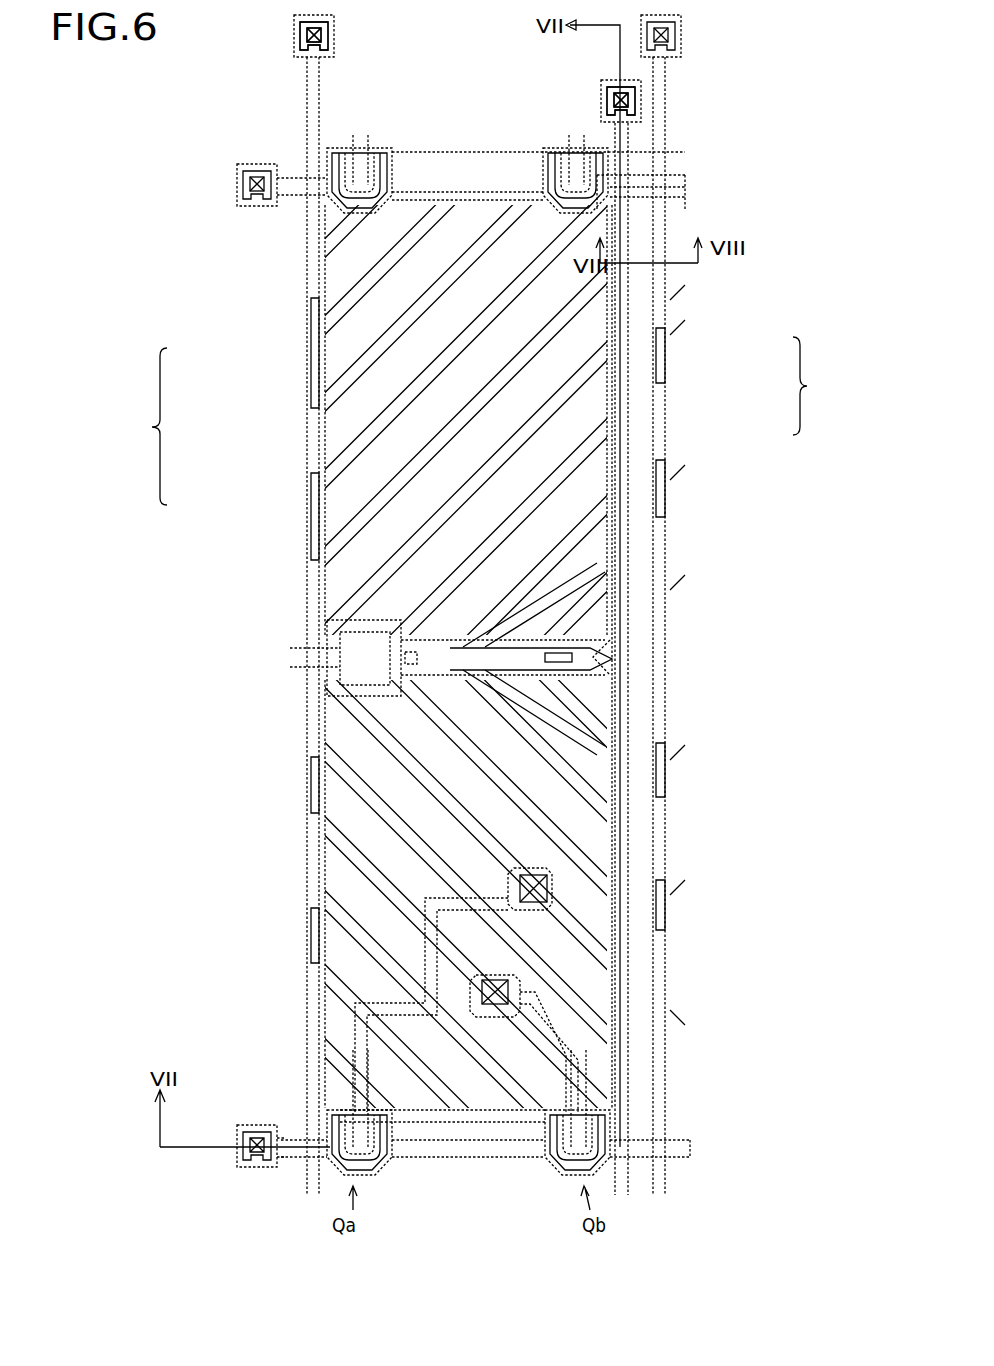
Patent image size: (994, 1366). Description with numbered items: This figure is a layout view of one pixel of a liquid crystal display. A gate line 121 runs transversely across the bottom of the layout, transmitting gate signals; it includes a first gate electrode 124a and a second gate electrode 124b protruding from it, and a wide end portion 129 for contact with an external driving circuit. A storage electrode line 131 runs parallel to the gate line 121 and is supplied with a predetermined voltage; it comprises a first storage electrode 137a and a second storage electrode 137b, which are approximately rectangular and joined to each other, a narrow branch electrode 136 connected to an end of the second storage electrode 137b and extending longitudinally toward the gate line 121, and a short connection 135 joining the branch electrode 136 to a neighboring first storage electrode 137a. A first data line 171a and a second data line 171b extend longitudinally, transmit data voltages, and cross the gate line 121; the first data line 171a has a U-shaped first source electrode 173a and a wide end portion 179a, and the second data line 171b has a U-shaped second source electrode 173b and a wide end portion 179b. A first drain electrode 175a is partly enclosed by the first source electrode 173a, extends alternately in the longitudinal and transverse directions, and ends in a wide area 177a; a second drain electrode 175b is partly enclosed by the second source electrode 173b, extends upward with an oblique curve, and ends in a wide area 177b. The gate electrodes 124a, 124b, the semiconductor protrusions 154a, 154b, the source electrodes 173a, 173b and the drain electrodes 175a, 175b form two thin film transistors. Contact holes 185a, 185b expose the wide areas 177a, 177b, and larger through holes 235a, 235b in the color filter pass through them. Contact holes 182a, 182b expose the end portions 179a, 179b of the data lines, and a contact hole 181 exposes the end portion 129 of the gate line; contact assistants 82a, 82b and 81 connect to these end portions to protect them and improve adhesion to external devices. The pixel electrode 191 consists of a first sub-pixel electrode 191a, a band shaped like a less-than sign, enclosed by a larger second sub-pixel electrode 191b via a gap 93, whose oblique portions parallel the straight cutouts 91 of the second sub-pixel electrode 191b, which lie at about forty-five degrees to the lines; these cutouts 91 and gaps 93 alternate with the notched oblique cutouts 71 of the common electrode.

The contact assistant 82a is at (294, 38).
The contact hole 182a is at (316, 36).
The end portion of first data line 179a is at (328, 42).
The contact assistant 82b is at (601, 108).
The contact hole 182b is at (620, 100).
The end portion of second data line 179b is at (607, 96).
The first data line 171a is at (307, 258).
The second data line 171b is at (628, 212).
The first sub-pixel electrode 191a is at (326, 283).
The second sub-pixel electrode 191b is at (346, 550).
The pixel electrode 191 is at (142, 426).
The cutout 91 is at (328, 378).
The cutout 71 is at (340, 455).
The gap 93 is at (330, 490).
The connection 135 is at (327, 640).
The branch electrode 136 is at (612, 790).
The first storage electrode 137a is at (400, 700).
The second storage electrode 137b is at (530, 640).
The storage electrode line 131 is at (791, 384).
The wide end portion of first drain electrode 177a is at (548, 880).
The contact hole 185a is at (546, 905).
The through hole 235a is at (555, 915).
The wide end portion of second drain electrode 177b is at (508, 985).
The contact hole 185b is at (512, 1005).
The through hole 235b is at (520, 1035).
The first drain electrode 175a is at (345, 1052).
The second drain electrode 175b is at (580, 1088).
The first gate electrode 124a is at (390, 1092).
The protrusion of first semiconductor stripe 154a is at (340, 1126).
The first source electrode 173a is at (375, 1172).
The second gate electrode 124b is at (600, 1176).
The protrusion of second semiconductor stripe 154b is at (566, 1176).
The second source electrode 173b is at (545, 1142).
The gate line 121 is at (450, 1166).
The end portion of gate line 129 is at (237, 1155).
The contact assistant 81 is at (247, 1168).
The contact hole 181 is at (260, 1160).